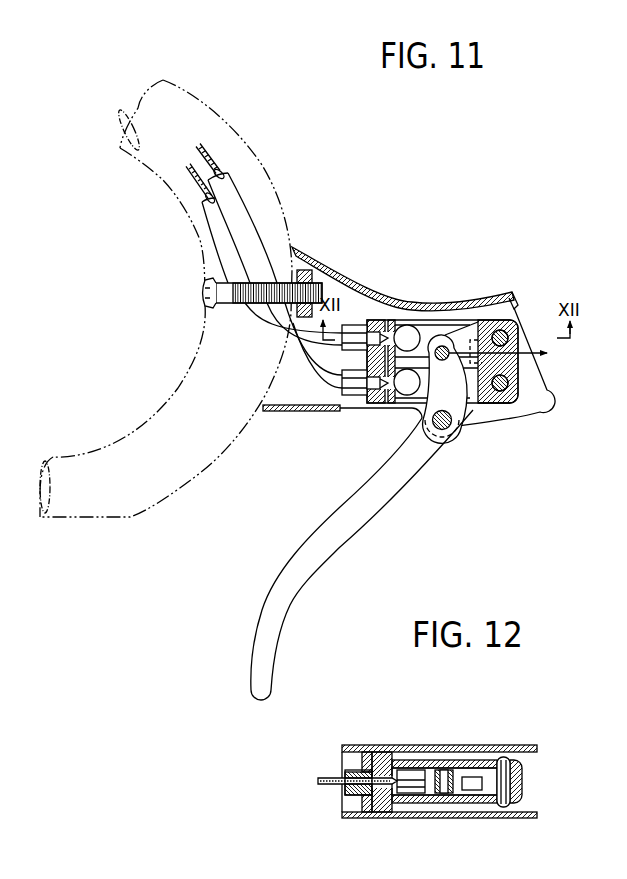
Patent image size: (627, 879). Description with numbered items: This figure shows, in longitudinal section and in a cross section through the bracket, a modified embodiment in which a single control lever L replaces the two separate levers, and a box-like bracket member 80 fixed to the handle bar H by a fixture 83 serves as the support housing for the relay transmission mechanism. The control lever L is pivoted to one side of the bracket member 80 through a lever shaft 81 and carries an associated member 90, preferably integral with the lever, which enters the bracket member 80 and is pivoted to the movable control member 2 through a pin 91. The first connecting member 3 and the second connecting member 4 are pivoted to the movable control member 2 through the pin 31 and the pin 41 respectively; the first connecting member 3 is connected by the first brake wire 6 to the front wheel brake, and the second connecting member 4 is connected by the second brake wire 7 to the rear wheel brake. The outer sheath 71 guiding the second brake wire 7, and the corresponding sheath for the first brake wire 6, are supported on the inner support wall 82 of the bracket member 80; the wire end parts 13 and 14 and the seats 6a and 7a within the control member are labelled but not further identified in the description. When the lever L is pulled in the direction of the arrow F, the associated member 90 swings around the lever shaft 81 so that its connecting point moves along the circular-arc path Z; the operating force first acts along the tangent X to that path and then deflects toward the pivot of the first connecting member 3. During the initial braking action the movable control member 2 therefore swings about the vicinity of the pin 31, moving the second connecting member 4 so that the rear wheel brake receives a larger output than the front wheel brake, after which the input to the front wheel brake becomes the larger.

In FIG. 11, the handle bar H is at (190, 94).
In FIG. 11, the second brake wire 7 is at (210, 160).
In FIG. 12, the second brake wire 7 is at (320, 783).
In FIG. 11, the first brake wire 6 is at (192, 182).
In FIG. 11, the fixture 83 is at (203, 285).
In FIG. 11, the bracket member 80 is at (510, 290).
In FIG. 12, the bracket member 80 is at (532, 745).
In FIG. 11, the inner support wall 82 is at (373, 325).
In FIG. 12, the inner support wall 82 is at (380, 760).
In FIG. 11, the cable end fitting 14 is at (353, 325).
In FIG. 12, the cable end fitting 14 is at (358, 797).
In FIG. 11, the cable end fitting 13 is at (352, 396).
In FIG. 11, the cable nipple bore 7a is at (407, 336).
In FIG. 12, the cable nipple bore 7a is at (408, 772).
In FIG. 11, the cable nipple bore 6a is at (402, 392).
In FIG. 11, the second connecting member 4 is at (470, 330).
In FIG. 12, the second connecting member 4 is at (476, 763).
In FIG. 11, the pin 41 is at (503, 336).
In FIG. 12, the pin 41 is at (503, 760).
In FIG. 11, the movable control member 2 is at (520, 365).
In FIG. 12, the movable control member 2 is at (523, 780).
In FIG. 11, the first connecting member 3 is at (470, 413).
In FIG. 11, the pin 91 is at (442, 350).
In FIG. 12, the pin 91 is at (443, 772).
In FIG. 11, the associated member 90 is at (460, 432).
In FIG. 12, the associated member 90 is at (456, 795).
In FIG. 11, the lever shaft 81 is at (443, 431).
In FIG. 11, the control lever L is at (363, 527).
In FIG. 11, the arrow F is at (281, 551).
In FIG. 11, the tangent X is at (509, 354).
In FIG. 11, the path Z is at (507, 409).
In FIG. 11, the pin 31 is at (514, 404).
In FIG. 12, the outer sheath 71 is at (346, 792).